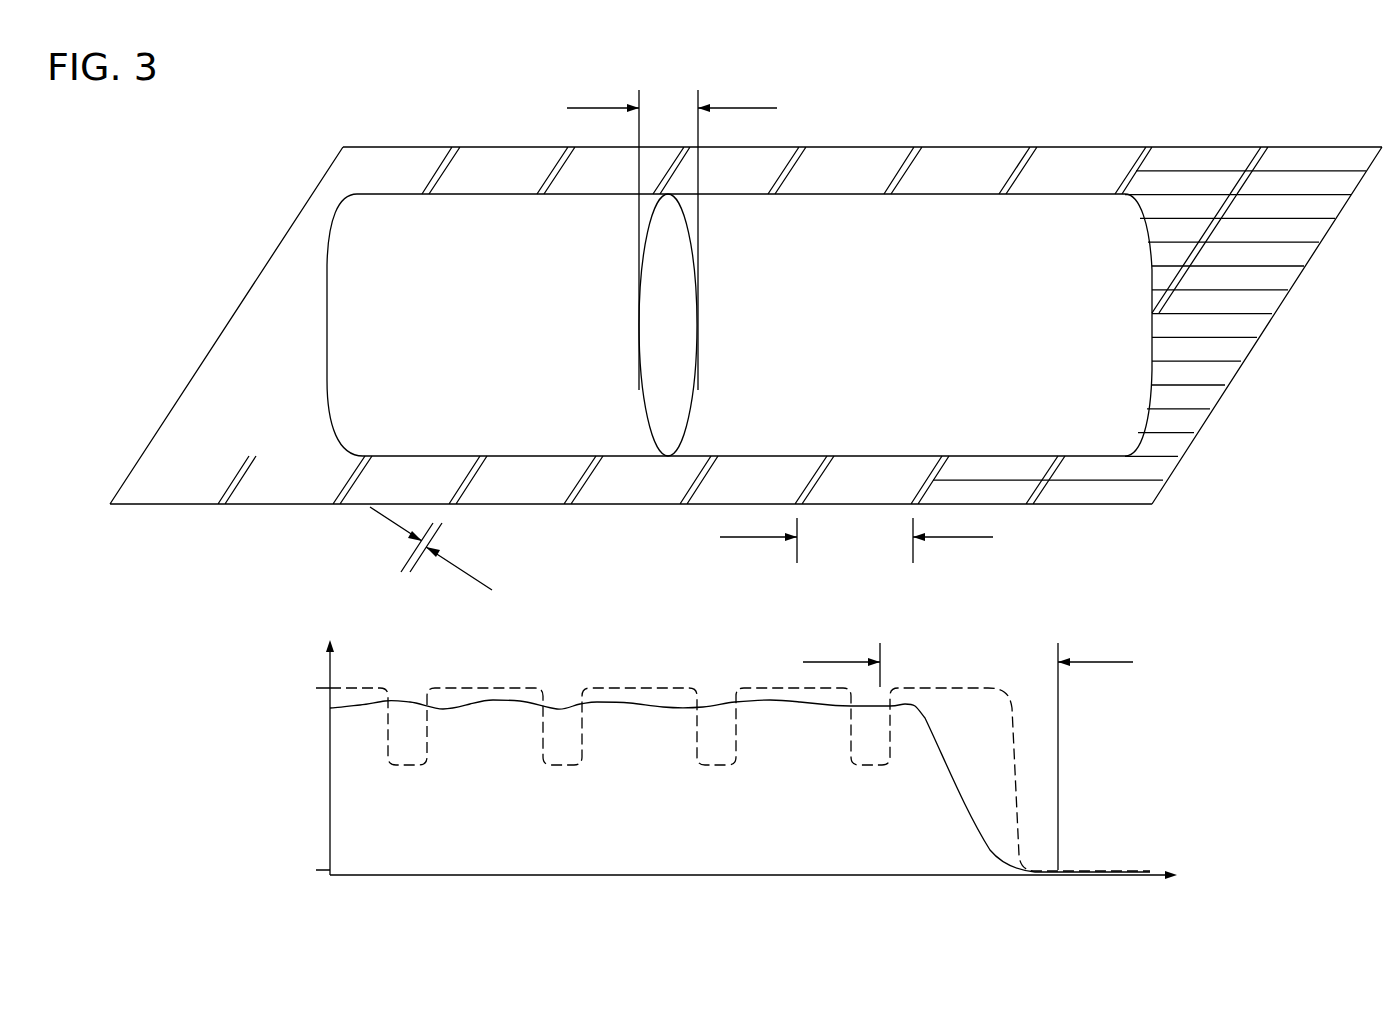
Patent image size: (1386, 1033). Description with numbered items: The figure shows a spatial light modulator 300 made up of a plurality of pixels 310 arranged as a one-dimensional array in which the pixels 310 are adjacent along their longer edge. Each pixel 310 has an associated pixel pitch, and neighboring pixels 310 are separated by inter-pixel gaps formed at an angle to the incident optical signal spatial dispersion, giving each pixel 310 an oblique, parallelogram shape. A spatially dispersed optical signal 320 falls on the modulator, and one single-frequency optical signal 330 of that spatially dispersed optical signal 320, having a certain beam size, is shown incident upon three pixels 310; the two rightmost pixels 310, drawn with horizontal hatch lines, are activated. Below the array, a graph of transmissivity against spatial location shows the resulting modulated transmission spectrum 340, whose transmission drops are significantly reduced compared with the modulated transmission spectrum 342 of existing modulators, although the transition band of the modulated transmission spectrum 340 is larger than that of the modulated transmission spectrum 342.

The spatial light modulator 300 is at (113, 123).
The pixels 310 is at (383, 158).
The spatially dispersed optical signal 320 is at (343, 212).
The single-frequency optical signal 330 is at (650, 432).
The modulated transmission spectrum 340 is at (487, 702).
The modulated transmission spectrum 342 is at (556, 757).